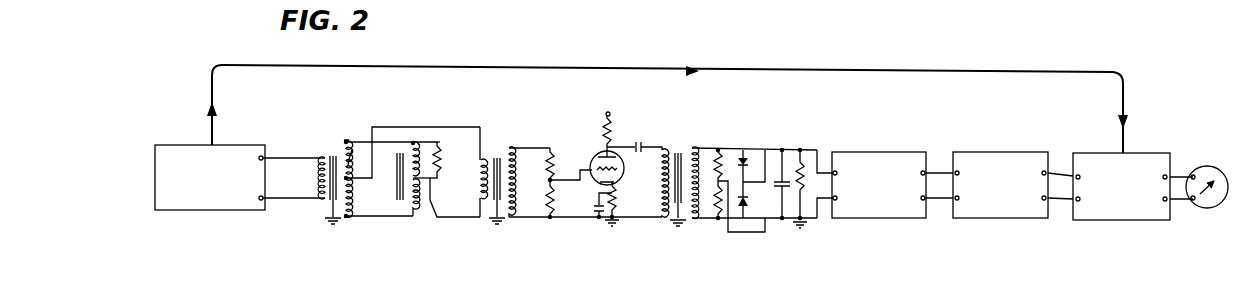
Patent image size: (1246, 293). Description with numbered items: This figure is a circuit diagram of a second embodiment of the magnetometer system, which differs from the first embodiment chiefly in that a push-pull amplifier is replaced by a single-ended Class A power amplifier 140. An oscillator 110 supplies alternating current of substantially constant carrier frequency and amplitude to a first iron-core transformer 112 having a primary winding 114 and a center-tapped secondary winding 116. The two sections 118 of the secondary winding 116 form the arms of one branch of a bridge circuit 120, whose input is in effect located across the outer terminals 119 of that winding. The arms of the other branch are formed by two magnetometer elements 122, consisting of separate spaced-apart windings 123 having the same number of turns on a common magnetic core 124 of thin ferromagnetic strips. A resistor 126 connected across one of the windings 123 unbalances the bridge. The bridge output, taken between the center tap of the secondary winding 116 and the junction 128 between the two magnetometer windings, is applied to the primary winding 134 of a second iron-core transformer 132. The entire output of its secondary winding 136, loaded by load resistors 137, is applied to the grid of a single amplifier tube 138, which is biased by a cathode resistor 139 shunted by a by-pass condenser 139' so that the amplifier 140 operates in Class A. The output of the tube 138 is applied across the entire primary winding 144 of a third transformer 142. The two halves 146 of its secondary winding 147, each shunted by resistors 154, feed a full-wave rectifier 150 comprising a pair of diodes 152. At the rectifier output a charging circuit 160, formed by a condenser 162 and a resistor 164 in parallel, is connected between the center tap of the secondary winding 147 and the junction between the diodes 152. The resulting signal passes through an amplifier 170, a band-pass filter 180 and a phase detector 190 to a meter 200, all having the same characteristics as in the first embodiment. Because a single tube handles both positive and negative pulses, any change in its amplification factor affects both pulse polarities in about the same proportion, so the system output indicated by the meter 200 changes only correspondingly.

The oscillator 110 is at (217, 214).
The first iron-core transformer 112 is at (332, 154).
The primary winding 114 is at (322, 191).
The center-tapped secondary winding 116 is at (351, 183).
The sections of the secondary winding 118 is at (355, 158).
The outer terminals of the secondary winding 119 is at (349, 141).
The bridge circuit 120 is at (384, 152).
The magnetometer elements 122 is at (417, 147).
The magnetometer windings 123 is at (439, 147).
The magnetic core 124 is at (400, 203).
The resistor 126 is at (442, 160).
The junction between the magnetometer windings 128 is at (417, 206).
The second iron-core transformer 132 is at (497, 156).
The primary winding 134 is at (478, 182).
The secondary winding 136 is at (515, 158).
The load resistors 137 is at (554, 158).
The amplifier tube 138 is at (620, 152).
The cathode resistor 139 is at (625, 218).
The by-pass condenser 139' is at (592, 219).
The single-ended Class A power amplifier 140 is at (597, 148).
The third transformer 142 is at (681, 150).
The primary winding 144 is at (660, 193).
The halves of the secondary winding 146 is at (717, 152).
The secondary winding 147 is at (694, 220).
The full-wave rectifier 150 is at (801, 158).
The diodes 152 is at (759, 152).
The resistors 154 is at (745, 151).
The charging circuit 160 is at (812, 149).
The condenser 162 is at (786, 195).
The resistor 164 is at (805, 223).
The amplifier 170 is at (930, 150).
The band-pass filter 180 is at (1040, 150).
The phase detector 190 is at (1112, 152).
The meter 200 is at (1208, 166).